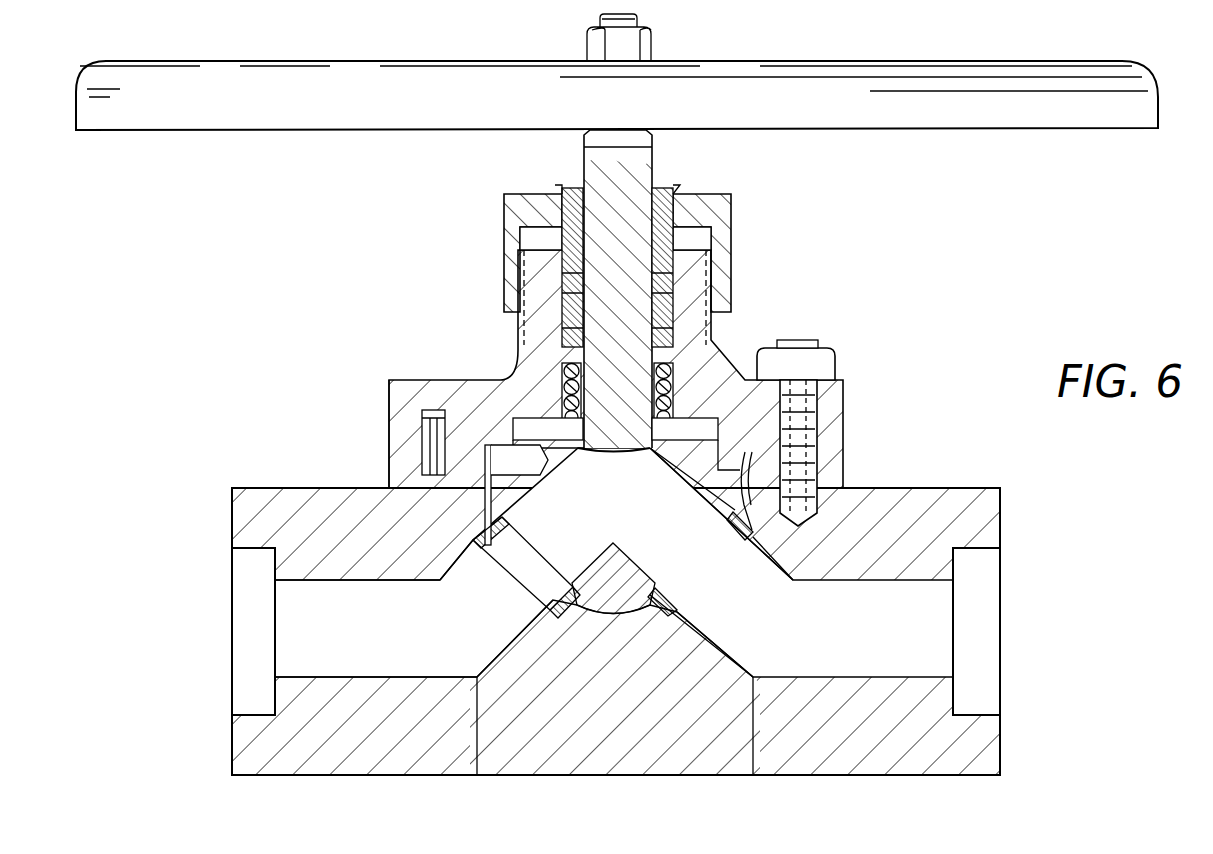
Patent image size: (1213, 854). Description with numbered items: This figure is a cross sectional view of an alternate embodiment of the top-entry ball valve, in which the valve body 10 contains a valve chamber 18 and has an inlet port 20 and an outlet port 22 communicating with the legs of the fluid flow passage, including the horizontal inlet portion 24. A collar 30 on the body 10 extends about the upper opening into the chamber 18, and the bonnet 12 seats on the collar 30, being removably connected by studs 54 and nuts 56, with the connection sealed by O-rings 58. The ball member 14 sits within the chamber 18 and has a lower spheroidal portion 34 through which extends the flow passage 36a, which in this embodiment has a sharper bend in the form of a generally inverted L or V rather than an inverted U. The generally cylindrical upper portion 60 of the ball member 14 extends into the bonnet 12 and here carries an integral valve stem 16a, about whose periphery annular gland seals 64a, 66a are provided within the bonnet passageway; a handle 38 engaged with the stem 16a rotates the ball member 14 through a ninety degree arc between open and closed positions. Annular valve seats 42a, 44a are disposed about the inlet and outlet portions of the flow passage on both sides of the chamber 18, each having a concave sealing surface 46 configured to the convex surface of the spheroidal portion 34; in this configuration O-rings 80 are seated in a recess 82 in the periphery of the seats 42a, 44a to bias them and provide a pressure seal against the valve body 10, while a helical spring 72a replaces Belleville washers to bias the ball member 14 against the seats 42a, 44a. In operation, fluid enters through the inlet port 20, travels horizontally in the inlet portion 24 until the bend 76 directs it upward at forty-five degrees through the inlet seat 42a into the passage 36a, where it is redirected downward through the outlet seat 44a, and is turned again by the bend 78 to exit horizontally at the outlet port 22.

The valve body 10 is at (232, 528).
The bonnet 12 is at (843, 408).
The ball member 14 is at (706, 492).
The integral valve stem 16a is at (578, 154).
The valve chamber 18 is at (490, 445).
The inlet port 20 is at (232, 706).
The outlet port 22 is at (1000, 622).
The inlet portion 24 is at (300, 606).
The collar 30 is at (398, 463).
The lower spheroidal portion 34 is at (628, 578).
The flow passage 36a is at (490, 503).
The handle 38 is at (790, 62).
The inlet valve seat 42a is at (497, 568).
The outlet valve seat 44a is at (722, 576).
The concave sealing surface 46 is at (560, 587).
The studs 54 is at (800, 341).
The nuts 56 is at (833, 365).
The O-rings 58 is at (398, 455).
The upper portion 60 is at (565, 435).
The gland seal 64a is at (700, 300).
The gland seal 66a is at (690, 308).
The helical spring 72a is at (703, 392).
The bend 76 is at (477, 677).
The bend 78 is at (763, 677).
The O-rings 80 is at (760, 533).
The recess 82 is at (553, 612).